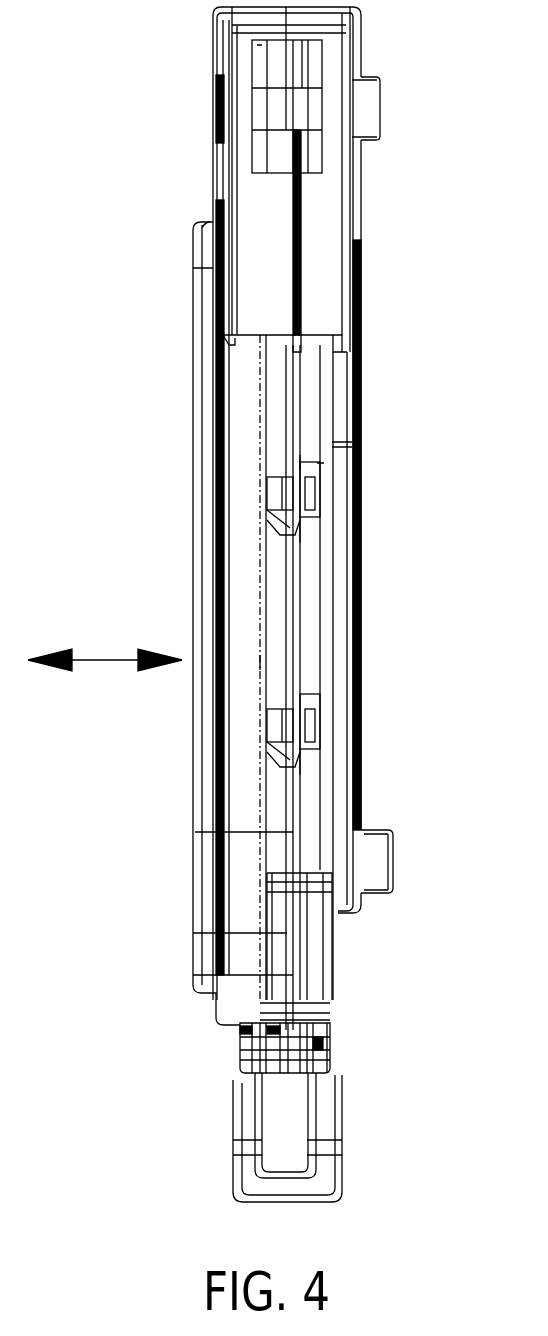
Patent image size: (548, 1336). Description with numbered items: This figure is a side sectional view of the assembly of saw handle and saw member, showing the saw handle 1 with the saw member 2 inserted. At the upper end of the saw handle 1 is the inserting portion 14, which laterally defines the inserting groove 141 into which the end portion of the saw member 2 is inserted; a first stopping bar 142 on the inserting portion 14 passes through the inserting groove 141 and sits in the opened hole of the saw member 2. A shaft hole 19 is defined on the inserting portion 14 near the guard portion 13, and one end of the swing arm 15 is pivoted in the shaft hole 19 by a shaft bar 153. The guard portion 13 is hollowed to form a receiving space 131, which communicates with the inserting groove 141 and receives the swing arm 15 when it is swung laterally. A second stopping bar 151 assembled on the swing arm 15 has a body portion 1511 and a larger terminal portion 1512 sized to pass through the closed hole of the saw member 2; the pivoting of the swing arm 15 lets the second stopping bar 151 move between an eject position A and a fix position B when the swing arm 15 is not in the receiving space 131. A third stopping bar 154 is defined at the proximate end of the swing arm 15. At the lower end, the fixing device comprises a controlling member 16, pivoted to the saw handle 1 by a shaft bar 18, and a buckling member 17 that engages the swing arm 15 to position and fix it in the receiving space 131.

The saw handle 1 is at (206, 36).
The inserting portion 14 is at (238, 50).
The inserting groove 141 is at (276, 75).
The first stopping bar 142 is at (310, 98).
The shaft bar 153 is at (362, 262).
The shaft hole 19 is at (358, 303).
The swing arm 15 is at (250, 463).
The saw member 2 is at (295, 447).
The second stopping bar 151 is at (318, 465).
The terminal portion 1512 is at (318, 500).
The body portion 1511 is at (277, 519).
The guard portion 13 is at (343, 561).
The receiving space 131 is at (310, 637).
The fix position B is at (295, 605).
The eject position A is at (265, 662).
The shaft bar 18 is at (385, 851).
The third stopping bar 154 is at (312, 938).
The buckling member 17 is at (322, 1048).
The controlling member 16 is at (330, 1105).